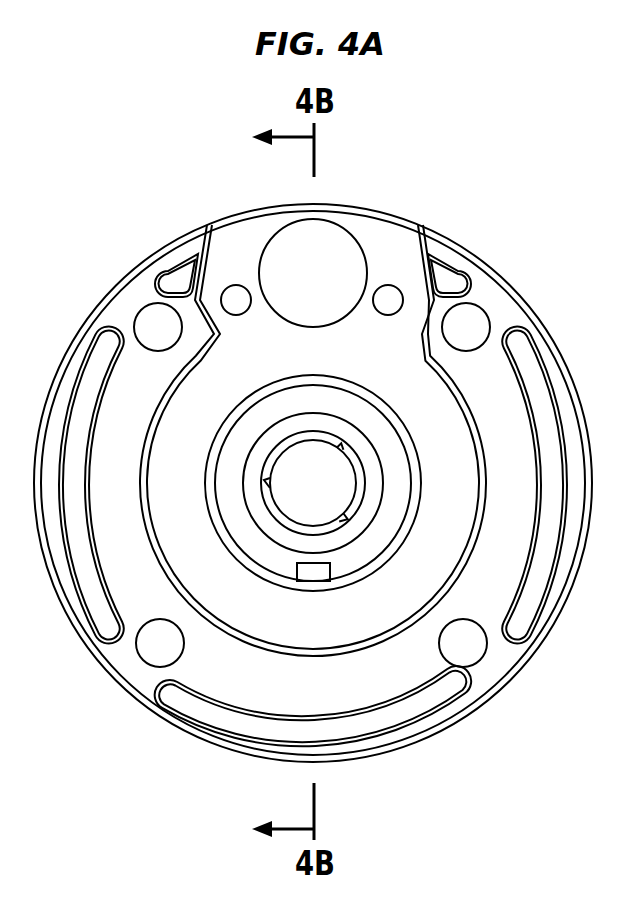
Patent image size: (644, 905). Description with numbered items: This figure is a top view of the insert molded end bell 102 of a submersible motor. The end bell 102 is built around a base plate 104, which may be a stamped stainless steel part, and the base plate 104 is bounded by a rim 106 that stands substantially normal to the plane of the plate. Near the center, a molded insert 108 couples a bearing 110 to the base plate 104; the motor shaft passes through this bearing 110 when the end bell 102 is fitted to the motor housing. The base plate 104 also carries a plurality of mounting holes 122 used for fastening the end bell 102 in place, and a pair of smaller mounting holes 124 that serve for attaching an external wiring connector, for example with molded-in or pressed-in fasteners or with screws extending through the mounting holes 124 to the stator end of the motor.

The insert molded end bell 102 is at (155, 776).
The base plate 104 is at (385, 238).
The rim 106 is at (497, 272).
The molded insert 108 is at (368, 552).
The bearing 110 is at (330, 535).
The mounting holes 122 is at (489, 320).
The mounting holes 124 is at (393, 281).